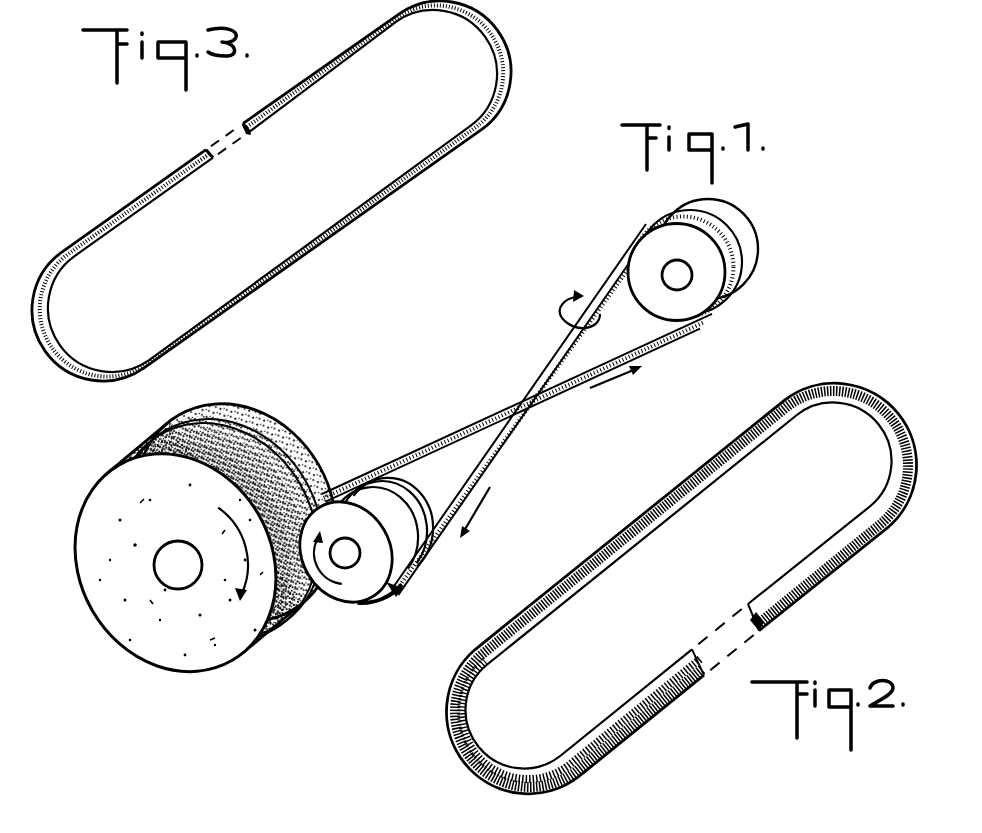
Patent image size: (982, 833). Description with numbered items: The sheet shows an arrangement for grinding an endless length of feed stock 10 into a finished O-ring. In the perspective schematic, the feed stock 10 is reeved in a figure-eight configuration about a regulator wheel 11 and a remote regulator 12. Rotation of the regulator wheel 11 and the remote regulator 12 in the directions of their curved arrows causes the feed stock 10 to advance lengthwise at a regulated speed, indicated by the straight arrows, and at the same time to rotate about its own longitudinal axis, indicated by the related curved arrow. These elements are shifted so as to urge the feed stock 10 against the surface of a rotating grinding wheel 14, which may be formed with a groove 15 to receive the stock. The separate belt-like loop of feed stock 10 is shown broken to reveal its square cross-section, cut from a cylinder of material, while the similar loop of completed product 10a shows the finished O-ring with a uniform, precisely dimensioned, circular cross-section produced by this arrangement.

In FIG. 1, the feed stock 10 is at (468, 425).
In FIG. 2, the feed stock 10 is at (633, 727).
In FIG. 3, the completed product 10a is at (352, 234).
In FIG. 1, the regulator wheel 11 is at (358, 588).
In FIG. 1, the remote regulator 12 is at (708, 290).
In FIG. 1, the grinding wheel 14 is at (205, 537).
In FIG. 1, the groove 15 is at (265, 448).